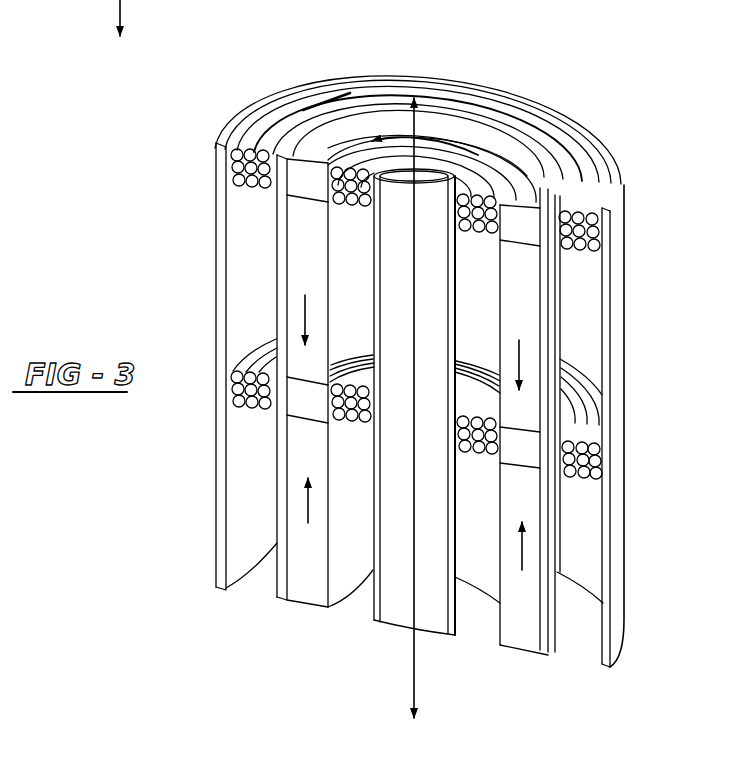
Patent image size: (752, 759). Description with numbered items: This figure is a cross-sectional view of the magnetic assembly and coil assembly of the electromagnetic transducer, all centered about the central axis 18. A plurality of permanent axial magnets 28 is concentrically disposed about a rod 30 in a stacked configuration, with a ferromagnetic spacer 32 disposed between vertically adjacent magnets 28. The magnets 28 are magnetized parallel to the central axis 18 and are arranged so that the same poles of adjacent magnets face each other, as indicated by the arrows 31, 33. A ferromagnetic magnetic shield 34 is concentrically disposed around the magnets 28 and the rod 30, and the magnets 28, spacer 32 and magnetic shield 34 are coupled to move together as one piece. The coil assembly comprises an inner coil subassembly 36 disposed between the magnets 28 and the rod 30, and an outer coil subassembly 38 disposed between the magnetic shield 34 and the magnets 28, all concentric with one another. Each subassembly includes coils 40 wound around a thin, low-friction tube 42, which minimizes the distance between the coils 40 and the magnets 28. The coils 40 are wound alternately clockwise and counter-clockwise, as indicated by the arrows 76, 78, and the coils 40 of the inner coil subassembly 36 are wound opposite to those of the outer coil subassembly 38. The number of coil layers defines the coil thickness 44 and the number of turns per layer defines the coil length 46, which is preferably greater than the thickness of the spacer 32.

The central axis 18 is at (413, 255).
The magnets 28 is at (348, 285).
The rod 30 is at (398, 588).
The arrow 31 is at (520, 362).
The spacer 32 is at (310, 403).
The arrow 33 is at (522, 549).
The magnetic shield 34 is at (242, 272).
The inner coil subassembly 36 is at (476, 352).
The outer coil subassembly 38 is at (246, 296).
The coils 40 is at (573, 407).
The tube 42 is at (450, 613).
The coil thickness 44 is at (498, 458).
The coil length 46 is at (456, 410).
The arrow 76 is at (592, 188).
The arrow 78 is at (392, 142).